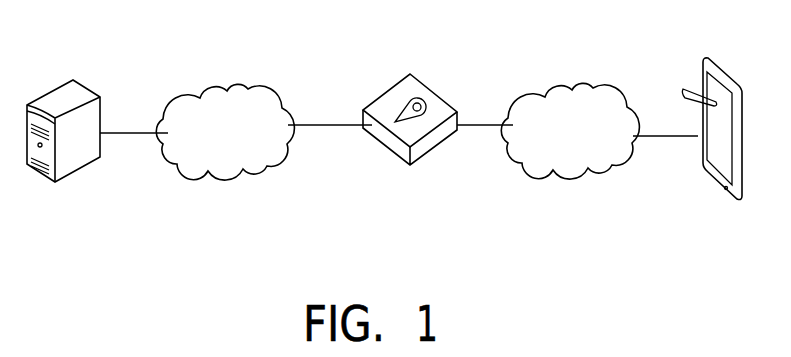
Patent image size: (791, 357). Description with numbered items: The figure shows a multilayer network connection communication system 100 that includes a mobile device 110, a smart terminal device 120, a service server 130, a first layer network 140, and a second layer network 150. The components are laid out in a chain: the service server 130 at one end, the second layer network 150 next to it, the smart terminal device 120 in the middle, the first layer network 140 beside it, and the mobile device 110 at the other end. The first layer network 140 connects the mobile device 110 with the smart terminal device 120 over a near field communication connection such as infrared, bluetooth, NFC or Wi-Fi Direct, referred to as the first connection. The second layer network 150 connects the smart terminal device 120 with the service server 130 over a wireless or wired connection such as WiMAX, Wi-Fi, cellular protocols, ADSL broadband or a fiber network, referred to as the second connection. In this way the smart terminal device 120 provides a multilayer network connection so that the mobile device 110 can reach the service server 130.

The multilayer network connection communication system 100 is at (730, 278).
The mobile device 110 is at (725, 73).
The smart terminal device 120 is at (435, 92).
The service server 130 is at (57, 80).
The first layer network 140 is at (572, 90).
The second layer network 150 is at (247, 86).